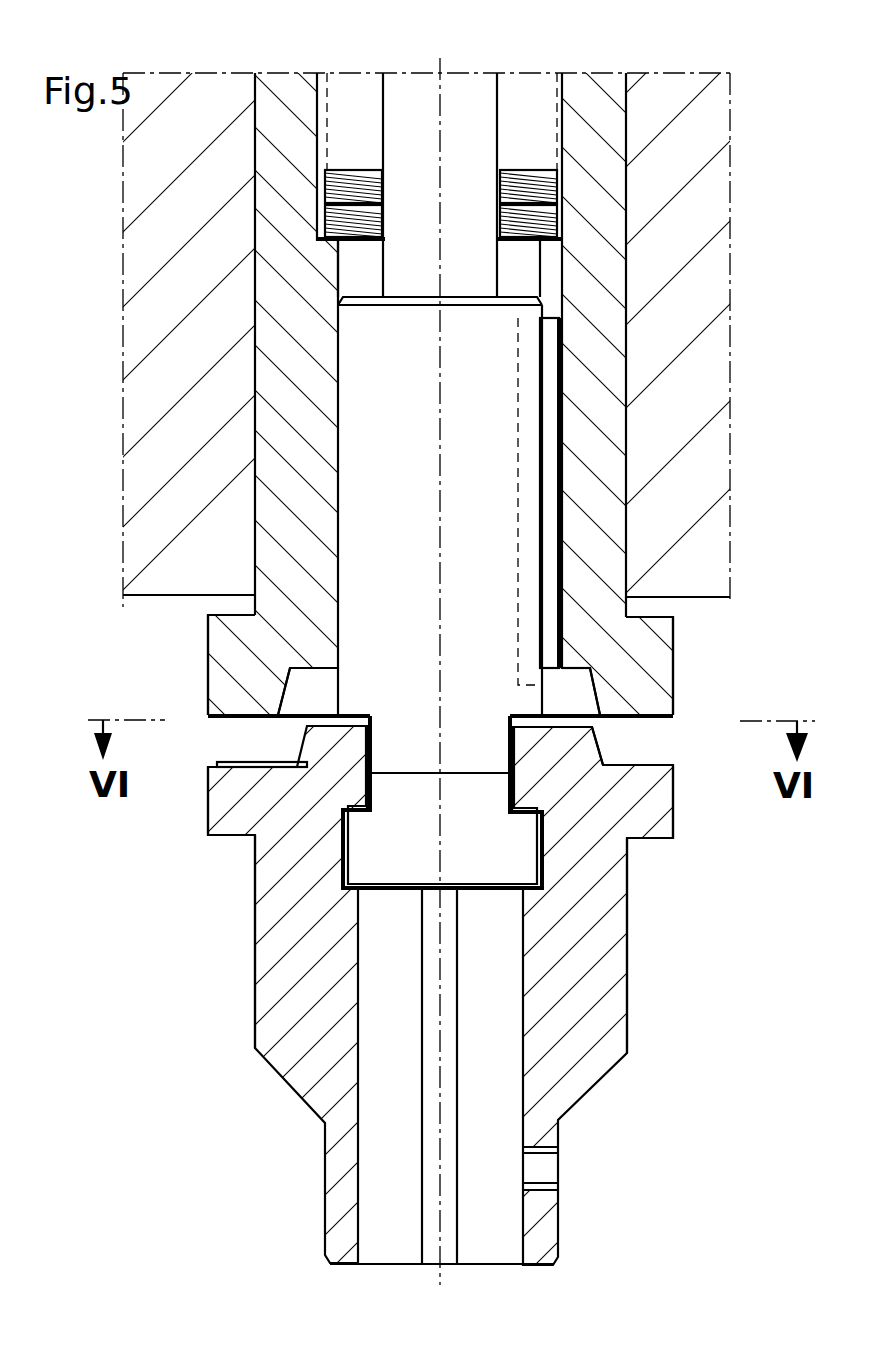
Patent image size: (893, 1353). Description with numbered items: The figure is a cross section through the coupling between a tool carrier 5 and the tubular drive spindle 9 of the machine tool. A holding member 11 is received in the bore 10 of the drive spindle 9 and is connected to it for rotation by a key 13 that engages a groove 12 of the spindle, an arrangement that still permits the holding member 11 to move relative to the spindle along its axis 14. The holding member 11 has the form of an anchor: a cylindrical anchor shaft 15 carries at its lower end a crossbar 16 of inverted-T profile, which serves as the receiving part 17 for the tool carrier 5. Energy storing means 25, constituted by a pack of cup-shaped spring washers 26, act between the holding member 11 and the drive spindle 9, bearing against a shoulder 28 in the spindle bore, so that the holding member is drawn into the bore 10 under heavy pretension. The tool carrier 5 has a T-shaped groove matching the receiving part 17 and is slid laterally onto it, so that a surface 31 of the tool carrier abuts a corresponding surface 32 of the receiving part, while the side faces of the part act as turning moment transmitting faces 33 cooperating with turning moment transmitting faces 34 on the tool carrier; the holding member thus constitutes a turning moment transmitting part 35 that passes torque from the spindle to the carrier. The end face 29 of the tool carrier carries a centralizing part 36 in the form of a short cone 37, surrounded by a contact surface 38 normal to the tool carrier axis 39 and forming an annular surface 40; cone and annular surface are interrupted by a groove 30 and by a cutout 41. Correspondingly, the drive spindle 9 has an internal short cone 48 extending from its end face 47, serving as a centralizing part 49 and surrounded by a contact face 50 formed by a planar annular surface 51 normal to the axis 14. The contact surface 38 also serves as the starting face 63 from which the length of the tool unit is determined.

The tool carrier 5 is at (610, 897).
The drive spindle 9 is at (593, 317).
The bore 10 is at (337, 496).
The holding member 11 is at (492, 478).
The groove 12 is at (547, 265).
The key 13 is at (549, 378).
The axis 14 is at (440, 405).
The anchor shaft 15 is at (485, 573).
The crossbar 16 is at (413, 857).
The receiving part 17 is at (512, 855).
The energy storing means 25 is at (534, 122).
The pack of cup-shaped spring washers 26 is at (545, 198).
The shoulder 28 is at (320, 240).
The end face 29 is at (256, 757).
The groove 30 is at (330, 870).
The surface 31 is at (600, 760).
The surface 32 is at (262, 865).
The turning moment transmitting faces 33 is at (545, 820).
The turning moment transmitting faces 34 is at (545, 905).
The turning moment transmitting part 35 is at (505, 618).
The centralizing part 36 is at (610, 740).
The short cone 37 is at (300, 727).
The contact surface 38 is at (300, 800).
The tool carrier axis 39 is at (445, 1044).
The annular surface 40 is at (598, 766).
The cutout 41 is at (308, 742).
The end face 47 is at (250, 716).
The internal short cone 48 is at (290, 678).
The centralizing part 49 is at (592, 690).
The contact face 50 is at (600, 713).
The planar annular surface 51 is at (604, 688).
The starting face 63 is at (700, 753).